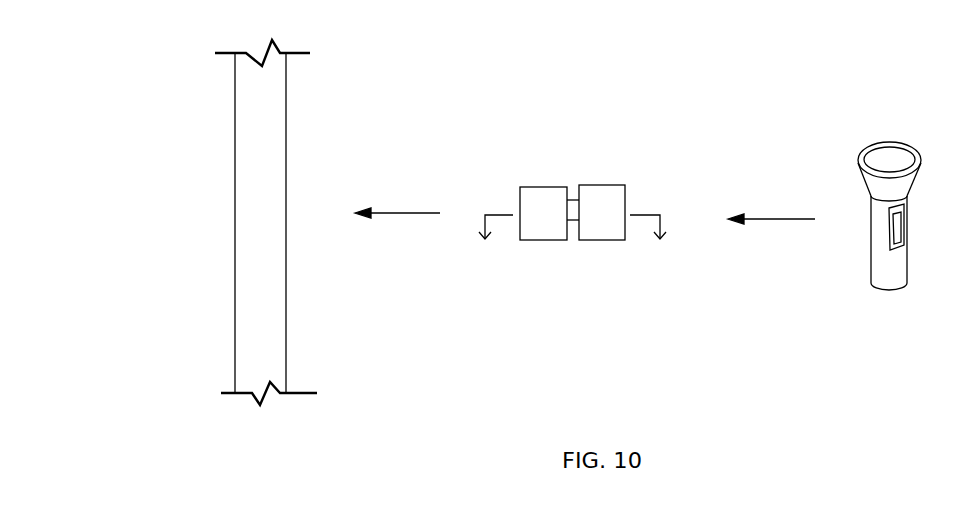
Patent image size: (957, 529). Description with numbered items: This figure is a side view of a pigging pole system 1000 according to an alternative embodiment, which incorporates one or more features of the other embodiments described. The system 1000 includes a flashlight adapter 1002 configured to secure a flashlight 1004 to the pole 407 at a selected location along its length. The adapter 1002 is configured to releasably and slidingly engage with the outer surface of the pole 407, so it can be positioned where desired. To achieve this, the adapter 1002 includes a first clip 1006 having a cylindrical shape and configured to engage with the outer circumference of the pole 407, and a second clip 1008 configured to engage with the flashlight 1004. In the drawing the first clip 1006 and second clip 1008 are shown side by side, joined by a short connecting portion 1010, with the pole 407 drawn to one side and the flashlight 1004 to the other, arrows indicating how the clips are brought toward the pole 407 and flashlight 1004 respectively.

The pigging pole system 1000 is at (158, 83).
The pole 407 is at (286, 124).
The flashlight adapter 1002 is at (598, 110).
The first clip 1006 is at (520, 190).
The second clip 1008 is at (625, 190).
The connector 1010 is at (572, 195).
The flashlight 1004 is at (870, 243).